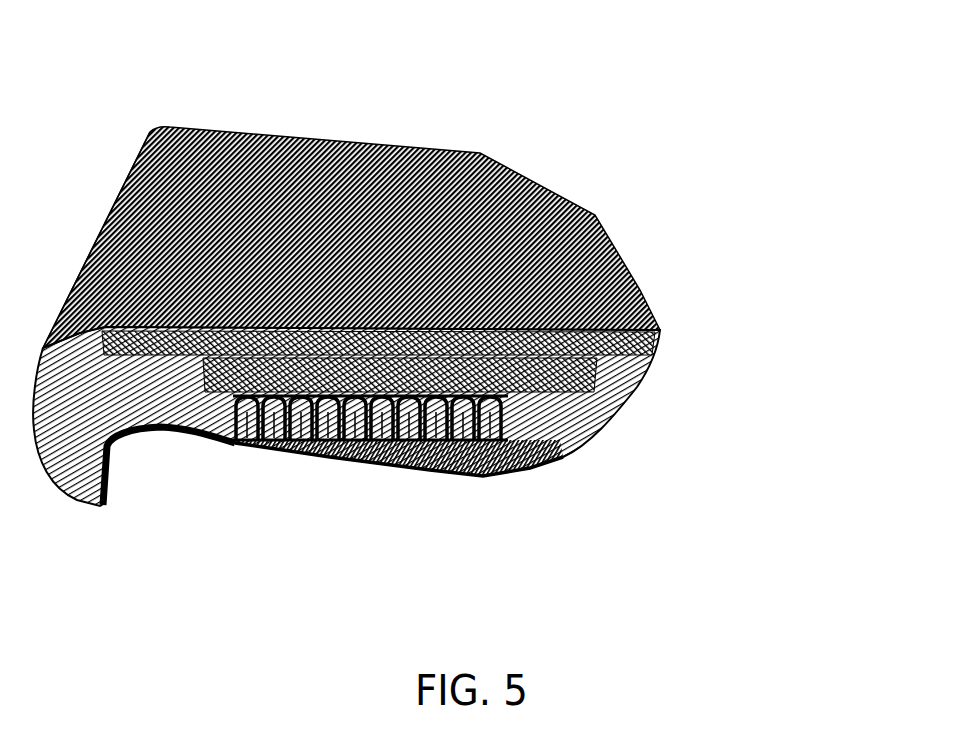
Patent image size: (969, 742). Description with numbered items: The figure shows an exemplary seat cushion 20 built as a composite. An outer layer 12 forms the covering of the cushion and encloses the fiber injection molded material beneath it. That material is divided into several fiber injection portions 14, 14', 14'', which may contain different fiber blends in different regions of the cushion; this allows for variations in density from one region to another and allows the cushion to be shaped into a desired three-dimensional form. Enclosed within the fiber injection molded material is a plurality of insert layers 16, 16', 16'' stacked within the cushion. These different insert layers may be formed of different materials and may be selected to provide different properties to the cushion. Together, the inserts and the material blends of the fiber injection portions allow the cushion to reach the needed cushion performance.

The seat cushion 20 is at (147, 84).
The outer layer 12 is at (415, 160).
The fiber injection molded portion 14 is at (415, 430).
The fiber injection portion 14' is at (532, 536).
The fiber injection portion 14'' is at (333, 513).
The insert layer 16 is at (468, 253).
The insert layer 16' is at (546, 303).
The insert layer 16'' is at (589, 360).